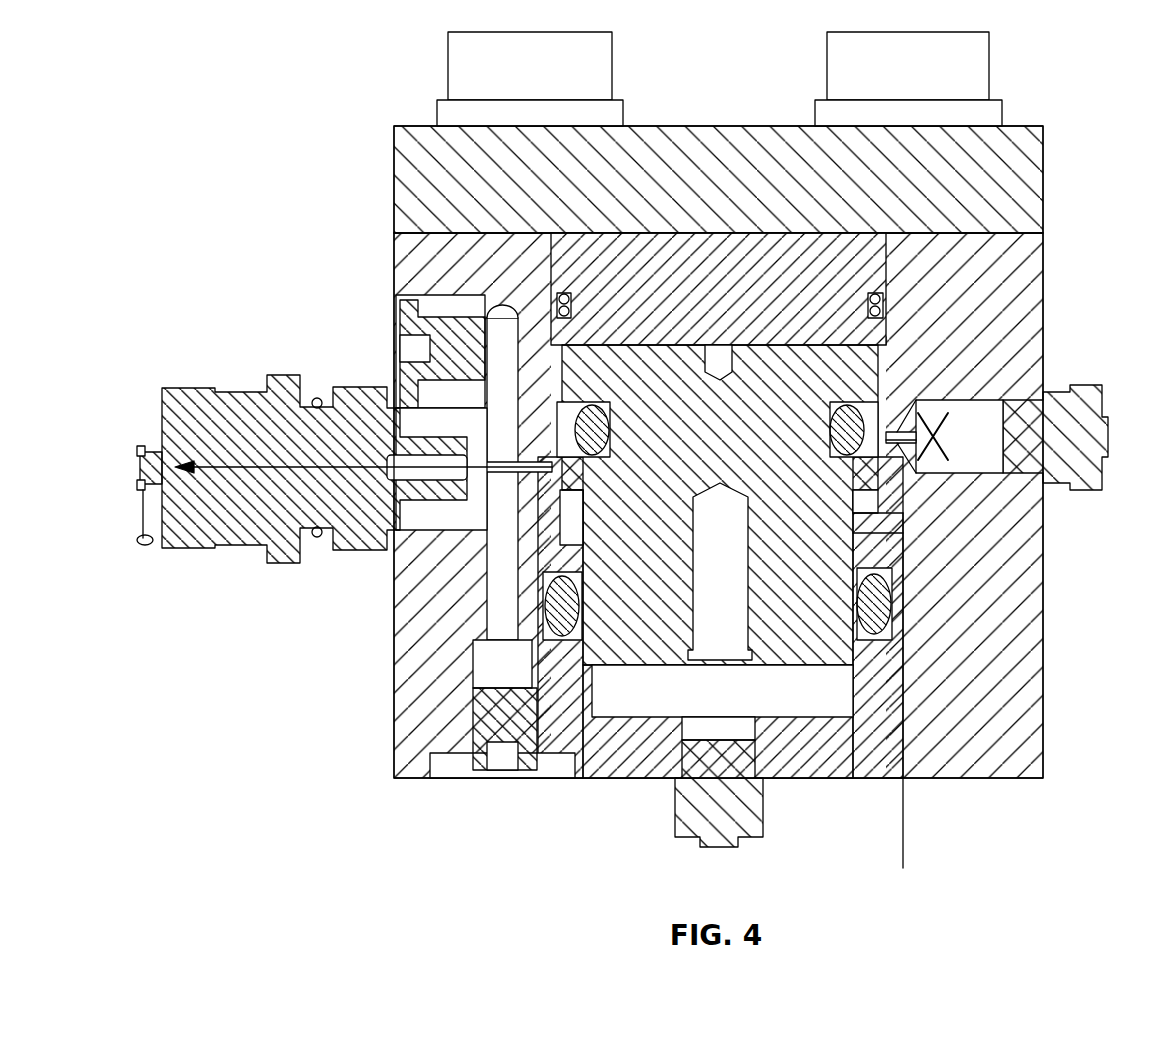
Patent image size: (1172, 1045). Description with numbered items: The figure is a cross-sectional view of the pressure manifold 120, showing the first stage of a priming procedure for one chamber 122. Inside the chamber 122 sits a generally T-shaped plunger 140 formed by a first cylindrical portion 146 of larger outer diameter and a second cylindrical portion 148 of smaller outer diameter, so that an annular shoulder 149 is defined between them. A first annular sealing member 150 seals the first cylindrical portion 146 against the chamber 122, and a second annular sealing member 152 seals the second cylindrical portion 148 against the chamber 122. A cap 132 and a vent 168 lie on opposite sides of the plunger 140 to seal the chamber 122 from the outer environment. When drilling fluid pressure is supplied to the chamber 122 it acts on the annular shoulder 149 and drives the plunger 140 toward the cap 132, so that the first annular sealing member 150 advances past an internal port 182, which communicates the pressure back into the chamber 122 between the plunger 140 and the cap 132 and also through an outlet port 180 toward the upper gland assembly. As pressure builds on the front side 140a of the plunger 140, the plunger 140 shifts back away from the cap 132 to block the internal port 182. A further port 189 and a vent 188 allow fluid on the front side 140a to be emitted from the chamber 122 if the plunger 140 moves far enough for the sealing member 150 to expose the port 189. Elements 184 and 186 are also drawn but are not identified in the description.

The pressure manifold 120 is at (1043, 698).
The first chamber 122 is at (889, 447).
The cap 132 is at (740, 222).
The first plunger 140 is at (572, 338).
The front side of the plunger 140a is at (797, 338).
The first cylindrical portion 146 is at (886, 375).
The second cylindrical portion 148 is at (785, 667).
The annular shoulder 149 is at (570, 493).
The first annular sealing member 150 is at (872, 534).
The second annular sealing member 152 is at (564, 642).
The vent 168 is at (748, 843).
The outlet port 180 is at (265, 388).
The internal port 182 is at (532, 478).
The plug 184 is at (398, 305).
The fastener 186 is at (473, 775).
The vent 188 is at (1108, 478).
The port 189 is at (860, 513).